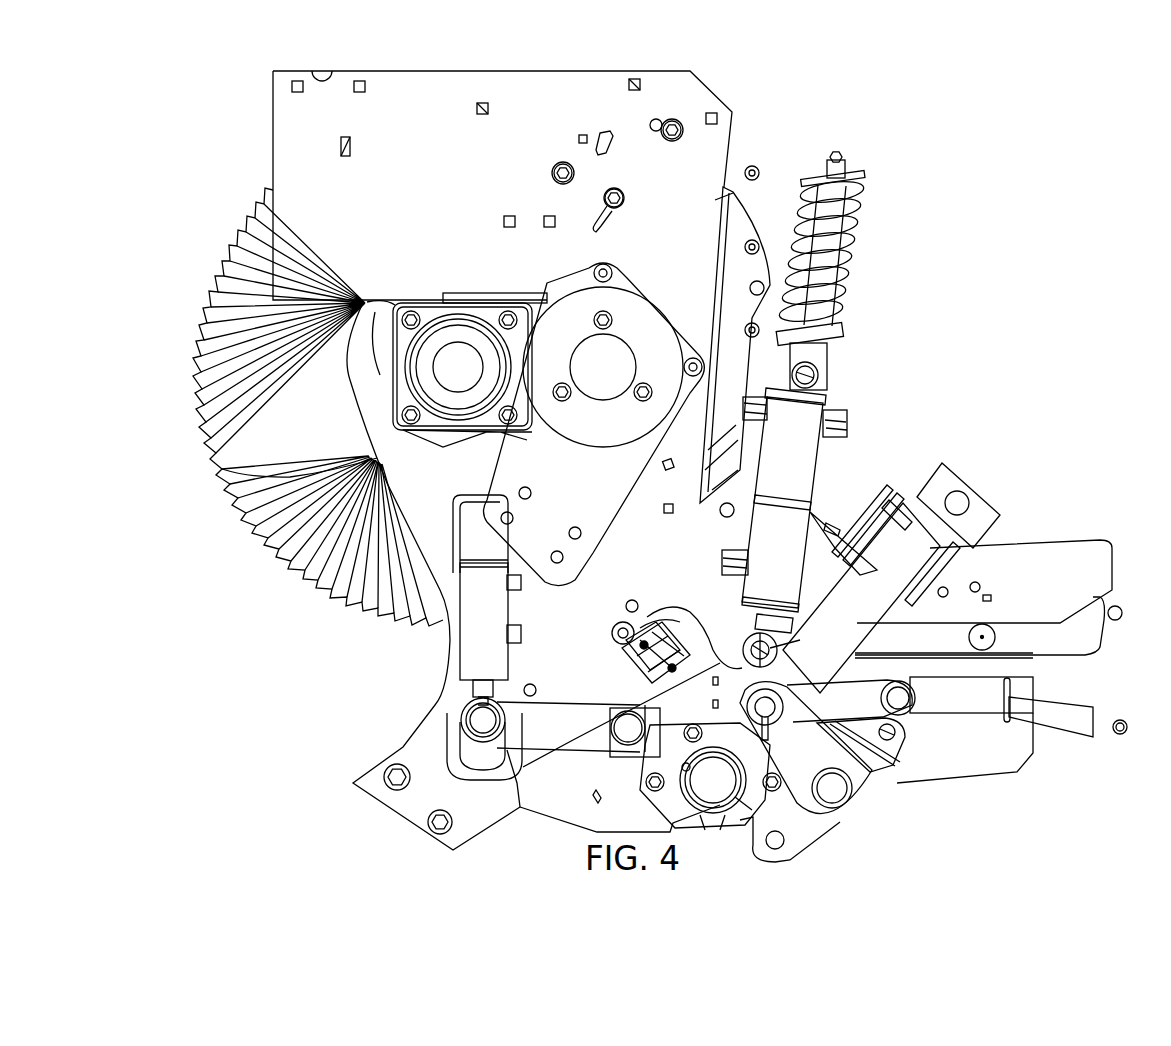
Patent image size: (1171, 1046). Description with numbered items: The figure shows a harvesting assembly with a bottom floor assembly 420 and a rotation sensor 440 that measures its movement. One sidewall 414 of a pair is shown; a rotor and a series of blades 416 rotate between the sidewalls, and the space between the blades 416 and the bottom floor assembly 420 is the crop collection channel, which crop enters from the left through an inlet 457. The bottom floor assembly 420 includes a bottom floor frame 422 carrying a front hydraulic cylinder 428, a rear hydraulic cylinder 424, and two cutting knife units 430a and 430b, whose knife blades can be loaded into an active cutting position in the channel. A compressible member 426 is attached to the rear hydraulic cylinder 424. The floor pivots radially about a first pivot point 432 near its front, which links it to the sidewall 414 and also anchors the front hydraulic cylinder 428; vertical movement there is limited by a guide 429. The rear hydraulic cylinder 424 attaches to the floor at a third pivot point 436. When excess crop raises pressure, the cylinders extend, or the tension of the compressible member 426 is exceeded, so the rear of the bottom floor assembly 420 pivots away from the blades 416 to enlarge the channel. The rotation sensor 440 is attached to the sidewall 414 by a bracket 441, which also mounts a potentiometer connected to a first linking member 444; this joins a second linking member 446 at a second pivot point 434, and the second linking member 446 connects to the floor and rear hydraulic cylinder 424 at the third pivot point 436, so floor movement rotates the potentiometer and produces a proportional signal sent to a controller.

The sidewall 414 is at (560, 92).
The series of blades 416 is at (242, 362).
The bottom floor assembly 420 is at (1022, 775).
The bottom floor frame 422 is at (1040, 560).
The rear pair of hydraulic cylinders 424 is at (803, 473).
The compressible members 426 is at (847, 250).
The front pair of hydraulic cylinders 428 is at (478, 607).
The guide 429 is at (450, 738).
The cutting knife unit 430a is at (1095, 636).
The cutting knife unit 430b is at (1055, 713).
The first pivot point 432 is at (483, 728).
The second pivot point 434 is at (614, 630).
The third pivot point 436 is at (750, 636).
The rotation sensor 440 is at (631, 746).
The bracket 441 is at (626, 648).
The first linking member 444 is at (640, 620).
The second linking member 446 is at (712, 642).
The inlet 457 is at (437, 674).